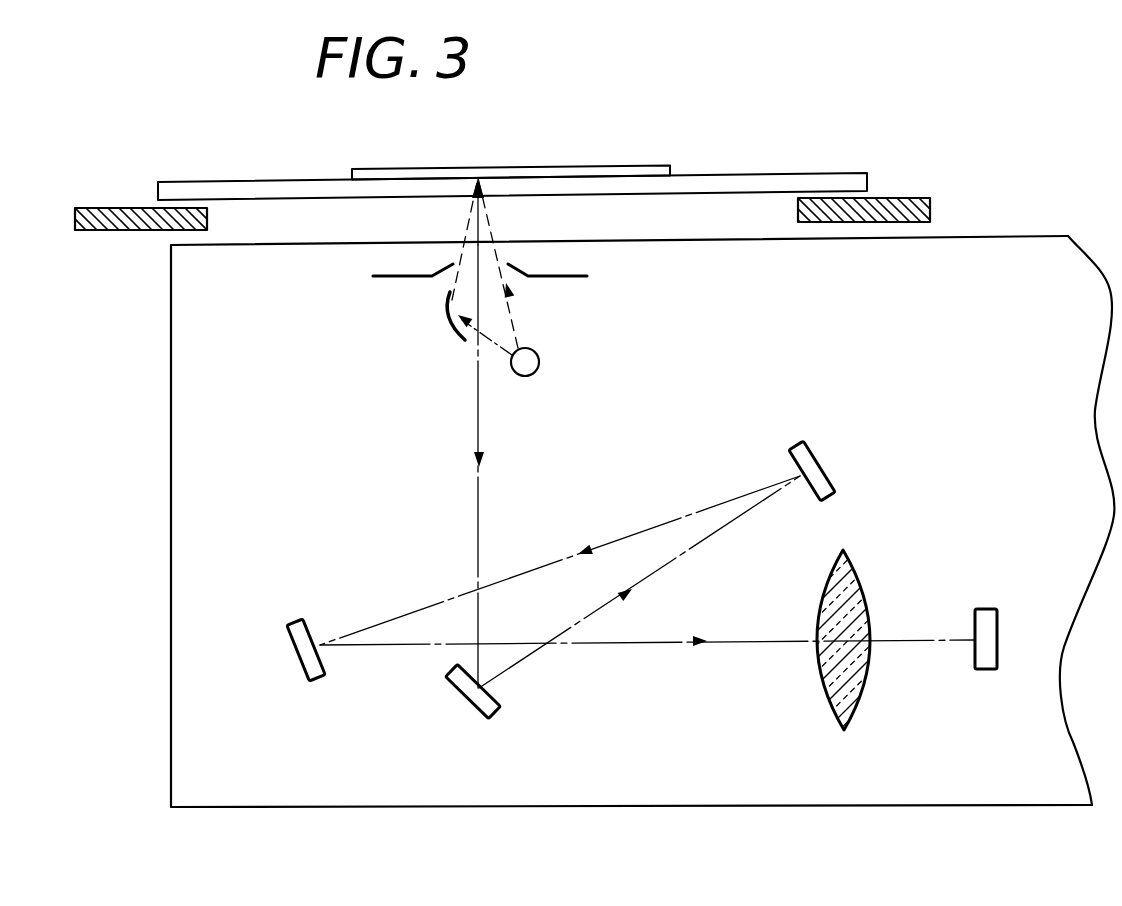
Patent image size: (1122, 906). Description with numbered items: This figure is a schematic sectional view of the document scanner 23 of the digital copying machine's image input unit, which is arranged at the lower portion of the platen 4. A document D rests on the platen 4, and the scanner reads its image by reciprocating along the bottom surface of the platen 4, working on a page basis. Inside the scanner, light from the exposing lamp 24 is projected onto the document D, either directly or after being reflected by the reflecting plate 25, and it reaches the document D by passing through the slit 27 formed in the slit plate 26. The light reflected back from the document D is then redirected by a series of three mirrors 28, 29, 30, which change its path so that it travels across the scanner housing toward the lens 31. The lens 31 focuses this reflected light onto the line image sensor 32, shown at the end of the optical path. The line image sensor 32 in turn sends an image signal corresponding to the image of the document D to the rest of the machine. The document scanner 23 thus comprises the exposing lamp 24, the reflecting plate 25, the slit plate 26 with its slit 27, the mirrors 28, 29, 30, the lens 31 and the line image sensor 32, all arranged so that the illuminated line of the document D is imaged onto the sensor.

The platen 4 is at (320, 200).
The document D is at (556, 168).
The document scanner 23 is at (722, 379).
The exposing lamp 24 is at (540, 362).
The reflecting plate 25 is at (455, 335).
The slit plate 26 is at (388, 277).
The slit 27 is at (467, 243).
The mirror 28 is at (468, 705).
The mirror 29 is at (825, 448).
The mirror 30 is at (290, 648).
The lens 31 is at (858, 573).
The line image sensor 32 is at (992, 606).